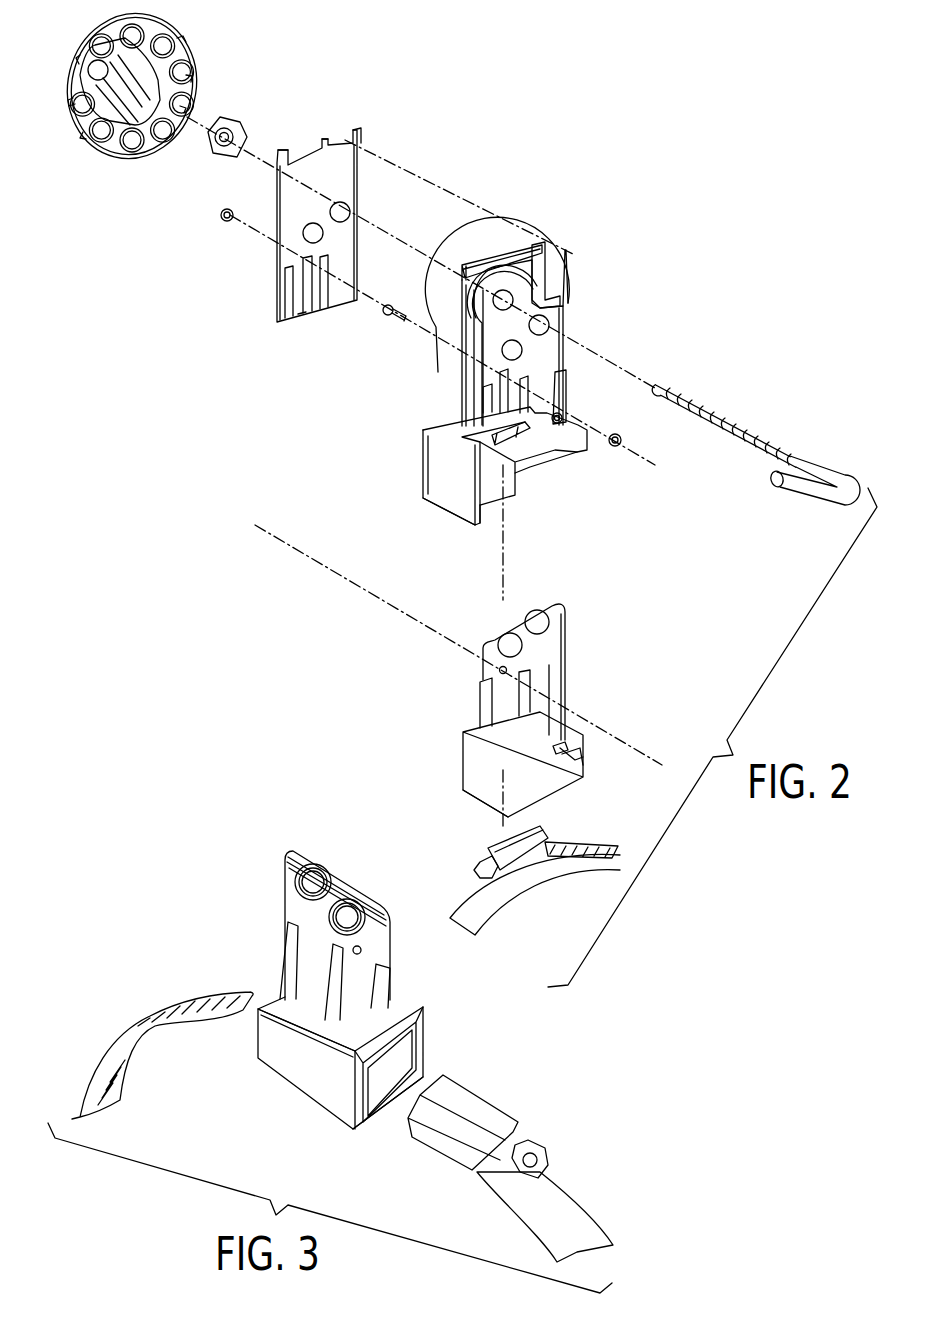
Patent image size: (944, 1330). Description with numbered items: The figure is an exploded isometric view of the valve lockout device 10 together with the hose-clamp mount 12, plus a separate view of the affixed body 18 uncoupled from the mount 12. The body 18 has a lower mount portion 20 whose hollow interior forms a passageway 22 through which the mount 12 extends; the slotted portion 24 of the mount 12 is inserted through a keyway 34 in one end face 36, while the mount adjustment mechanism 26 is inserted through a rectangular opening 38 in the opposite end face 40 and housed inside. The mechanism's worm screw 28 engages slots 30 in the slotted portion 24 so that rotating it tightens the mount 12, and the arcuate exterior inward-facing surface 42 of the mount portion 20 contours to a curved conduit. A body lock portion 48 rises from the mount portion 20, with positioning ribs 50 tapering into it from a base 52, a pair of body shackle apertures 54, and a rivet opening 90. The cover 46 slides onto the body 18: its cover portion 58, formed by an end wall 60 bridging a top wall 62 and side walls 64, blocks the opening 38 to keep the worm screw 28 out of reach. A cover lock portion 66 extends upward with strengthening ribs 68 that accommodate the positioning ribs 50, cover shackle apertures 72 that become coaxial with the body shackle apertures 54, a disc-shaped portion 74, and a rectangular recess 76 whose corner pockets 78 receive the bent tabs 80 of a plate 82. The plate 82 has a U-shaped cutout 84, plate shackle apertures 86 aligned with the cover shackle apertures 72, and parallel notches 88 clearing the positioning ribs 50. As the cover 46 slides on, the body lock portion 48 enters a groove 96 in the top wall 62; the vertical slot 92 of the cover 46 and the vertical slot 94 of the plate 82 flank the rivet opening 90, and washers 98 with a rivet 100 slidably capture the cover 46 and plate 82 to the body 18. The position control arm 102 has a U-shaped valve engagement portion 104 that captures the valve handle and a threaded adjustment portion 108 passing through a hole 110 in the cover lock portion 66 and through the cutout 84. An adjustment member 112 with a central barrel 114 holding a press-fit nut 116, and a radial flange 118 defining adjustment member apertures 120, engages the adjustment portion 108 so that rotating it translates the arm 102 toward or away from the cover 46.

In FIG. 2, the lockout device 10 is at (620, 234).
In FIG. 2, the hose-clamp mount 12 is at (497, 920).
In FIG. 3, the hose-clamp mount 12 is at (524, 1168).
In FIG. 2, the affixed body 18 is at (514, 682).
In FIG. 3, the affixed body 18 is at (364, 995).
In FIG. 2, the lower mount portion 20 is at (514, 745).
In FIG. 3, the lower mount portion 20 is at (378, 1082).
In FIG. 2, the passageway 22 is at (580, 762).
In FIG. 3, the passageway 22 is at (372, 1086).
In FIG. 2, the slotted portion 24 is at (529, 879).
In FIG. 3, the slotted portion 24 is at (162, 1031).
In FIG. 2, the mount retaining and adjustment mechanism 26 is at (478, 858).
In FIG. 3, the mount retaining and adjustment mechanism 26 is at (516, 1105).
In FIG. 2, the worm screw 28 is at (479, 880).
In FIG. 3, the worm screw 28 is at (546, 1142).
In FIG. 2, the slots 30 is at (592, 850).
In FIG. 3, the slots 30 is at (200, 992).
In FIG. 2, the keyway 34 is at (563, 748).
In FIG. 2, the end face 36 is at (580, 748).
In FIG. 3, the rectangular opening 38 is at (418, 1045).
In FIG. 3, the opposite end face 40 is at (358, 1105).
In FIG. 2, the exterior inward-facing surface 42 is at (545, 790).
In FIG. 2, the cover 46 is at (470, 484).
In FIG. 2, the body lock portion 48 is at (569, 608).
In FIG. 3, the body lock portion 48 is at (285, 880).
In FIG. 2, the positioning ribs 50 is at (480, 702).
In FIG. 3, the positioning ribs 50 is at (330, 973).
In FIG. 3, the base 52 is at (293, 1008).
In FIG. 2, the body shackle apertures 54 is at (537, 608).
In FIG. 3, the body shackle apertures 54 is at (372, 915).
In FIG. 2, the cover portion 58 is at (420, 480).
In FIG. 2, the end wall 60 is at (455, 503).
In FIG. 2, the top wall 62 is at (547, 437).
In FIG. 2, the side walls 64 is at (543, 512).
In FIG. 2, the cover lock portion 66 is at (572, 313).
In FIG. 2, the strengthening ribs 68 is at (566, 400).
In FIG. 2, the cover shackle apertures 72 is at (523, 352).
In FIG. 2, the disc-shaped portion 74 is at (531, 291).
In FIG. 2, the rectangular recess 76 is at (547, 278).
In FIG. 2, the pockets 78 is at (463, 265).
In FIG. 2, the bent tabs 80 is at (283, 150).
In FIG. 2, the plate 82 is at (274, 226).
In FIG. 2, the U-shaped cutout 84 is at (327, 190).
In FIG. 2, the plate shackle apertures 86 is at (317, 222).
In FIG. 2, the parallel notches 88 is at (283, 293).
In FIG. 2, the rivet opening 90 is at (499, 670).
In FIG. 3, the rivet opening 90 is at (362, 950).
In FIG. 2, the vertical slot 92 is at (507, 385).
In FIG. 2, the vertical slot 94 is at (318, 308).
In FIG. 2, the groove 96 is at (226, 208).
In FIG. 2, the washers 98 is at (621, 441).
In FIG. 2, the rivet 100 is at (392, 307).
In FIG. 2, the position control arm 102 is at (756, 447).
In FIG. 2, the valve engagement portion 104 is at (795, 503).
In FIG. 2, the adjustment portion 108 is at (685, 392).
In FIG. 2, the hole 110 is at (513, 293).
In FIG. 2, the adjustment member 112 is at (140, 163).
In FIG. 2, the central barrel 114 is at (123, 82).
In FIG. 2, the nut 116 is at (228, 125).
In FIG. 2, the radial flange 118 is at (178, 28).
In FIG. 2, the adjustment member apertures 120 is at (122, 157).